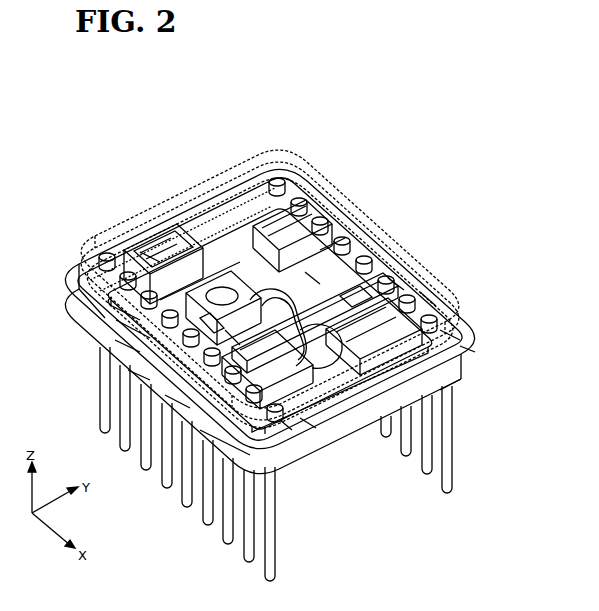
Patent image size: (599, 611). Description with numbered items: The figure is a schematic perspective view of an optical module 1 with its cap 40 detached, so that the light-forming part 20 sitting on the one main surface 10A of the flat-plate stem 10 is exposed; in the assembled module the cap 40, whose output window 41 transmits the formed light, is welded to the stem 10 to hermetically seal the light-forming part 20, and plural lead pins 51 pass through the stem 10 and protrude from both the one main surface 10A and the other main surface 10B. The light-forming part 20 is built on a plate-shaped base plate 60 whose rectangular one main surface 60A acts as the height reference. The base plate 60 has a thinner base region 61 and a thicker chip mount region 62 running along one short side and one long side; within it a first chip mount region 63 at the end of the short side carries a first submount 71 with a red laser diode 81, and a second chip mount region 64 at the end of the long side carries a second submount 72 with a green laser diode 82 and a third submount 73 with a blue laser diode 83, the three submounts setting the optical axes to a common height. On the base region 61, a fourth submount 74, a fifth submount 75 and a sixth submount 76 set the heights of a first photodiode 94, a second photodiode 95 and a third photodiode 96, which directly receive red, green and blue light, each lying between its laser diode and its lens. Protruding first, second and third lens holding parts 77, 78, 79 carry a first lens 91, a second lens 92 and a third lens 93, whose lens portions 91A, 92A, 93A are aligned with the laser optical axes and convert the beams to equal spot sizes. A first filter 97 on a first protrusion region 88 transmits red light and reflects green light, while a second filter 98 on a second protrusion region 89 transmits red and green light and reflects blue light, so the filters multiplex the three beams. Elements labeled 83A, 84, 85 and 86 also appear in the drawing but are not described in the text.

The optical module 1 is at (397, 150).
The stem 10 is at (480, 362).
The one main surface 10A is at (470, 298).
The other main surface 10B is at (470, 376).
The light-forming part 20 is at (445, 386).
The cap 40 is at (450, 310).
The output window 41 is at (352, 410).
The lead pins 51 is at (103, 358).
The base plate 60 is at (440, 412).
The one main surface 60A is at (228, 236).
The base region 61 is at (225, 482).
The chip mount region 62 is at (248, 222).
The first chip mount region 63 is at (178, 252).
The second chip mount region 64 is at (436, 302).
The first submount 71 is at (138, 250).
The second submount 72 is at (392, 275).
The third submount 73 is at (422, 292).
The fourth submount 74 is at (115, 320).
The fifth submount 75 is at (310, 275).
The sixth submount 76 is at (470, 346).
The first lens holding part 77 is at (115, 340).
The second lens holding part 78 is at (165, 395).
The third lens holding part 79 is at (305, 422).
The red laser diode 81 is at (152, 240).
The green laser diode 82 is at (372, 262).
The blue laser diode 83 is at (407, 280).
The connection terminal 83A is at (374, 394).
The connection terminal 84 is at (92, 282).
The connection terminal 85 is at (352, 265).
The connection terminal 86 is at (456, 322).
The first protrusion region 88 is at (142, 380).
The second protrusion region 89 is at (300, 427).
The first lens 91 is at (195, 302).
The lens portion 91A is at (215, 292).
The second lens 92 is at (283, 300).
The lens portion 92A is at (255, 300).
The third lens 93 is at (333, 420).
The lens portion 93A is at (326, 442).
The first photodiode 94 is at (104, 302).
The second photodiode 95 is at (328, 250).
The third photodiode 96 is at (462, 334).
The first filter 97 is at (125, 365).
The second filter 98 is at (284, 432).